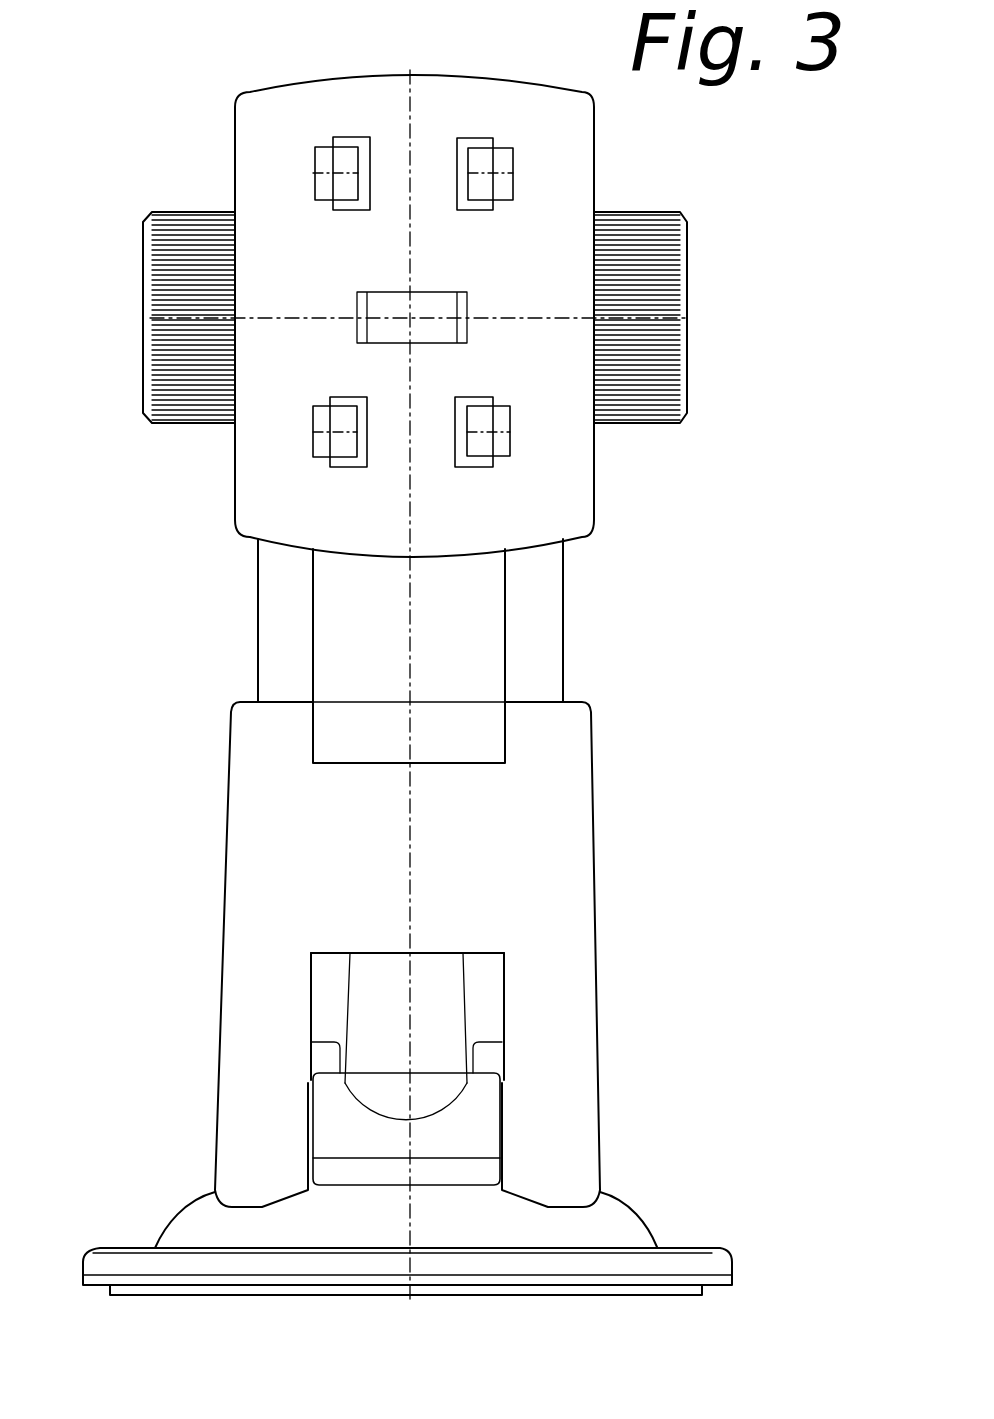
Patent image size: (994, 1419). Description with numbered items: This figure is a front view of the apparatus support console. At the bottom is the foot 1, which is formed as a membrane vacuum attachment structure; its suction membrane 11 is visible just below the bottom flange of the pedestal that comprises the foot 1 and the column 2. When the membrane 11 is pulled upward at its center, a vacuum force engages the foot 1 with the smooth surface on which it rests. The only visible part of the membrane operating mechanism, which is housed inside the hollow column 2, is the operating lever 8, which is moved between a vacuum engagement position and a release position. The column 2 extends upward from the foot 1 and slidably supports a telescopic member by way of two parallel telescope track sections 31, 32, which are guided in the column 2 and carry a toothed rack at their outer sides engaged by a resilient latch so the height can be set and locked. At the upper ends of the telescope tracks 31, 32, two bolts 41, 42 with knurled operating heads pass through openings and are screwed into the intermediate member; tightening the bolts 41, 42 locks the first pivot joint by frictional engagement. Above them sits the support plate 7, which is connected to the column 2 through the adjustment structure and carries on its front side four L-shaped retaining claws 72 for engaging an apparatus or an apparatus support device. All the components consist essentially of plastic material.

The foot 1 is at (600, 1230).
The suction membrane 11 is at (457, 1288).
The column 2 is at (568, 852).
The telescope track section 31 is at (550, 612).
The telescope track section 32 is at (272, 607).
The bolt 41 is at (663, 343).
The bolt 42 is at (162, 336).
The support plate 7 is at (552, 197).
The L-shaped retaining claws 72 is at (340, 162).
The operating lever 8 is at (540, 1157).